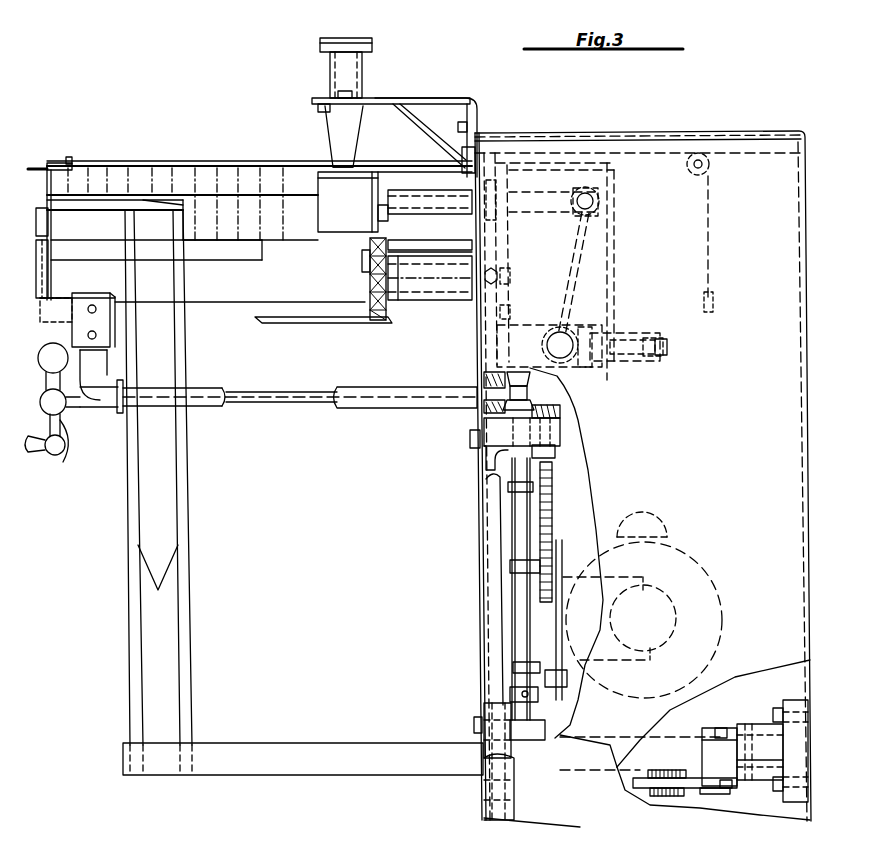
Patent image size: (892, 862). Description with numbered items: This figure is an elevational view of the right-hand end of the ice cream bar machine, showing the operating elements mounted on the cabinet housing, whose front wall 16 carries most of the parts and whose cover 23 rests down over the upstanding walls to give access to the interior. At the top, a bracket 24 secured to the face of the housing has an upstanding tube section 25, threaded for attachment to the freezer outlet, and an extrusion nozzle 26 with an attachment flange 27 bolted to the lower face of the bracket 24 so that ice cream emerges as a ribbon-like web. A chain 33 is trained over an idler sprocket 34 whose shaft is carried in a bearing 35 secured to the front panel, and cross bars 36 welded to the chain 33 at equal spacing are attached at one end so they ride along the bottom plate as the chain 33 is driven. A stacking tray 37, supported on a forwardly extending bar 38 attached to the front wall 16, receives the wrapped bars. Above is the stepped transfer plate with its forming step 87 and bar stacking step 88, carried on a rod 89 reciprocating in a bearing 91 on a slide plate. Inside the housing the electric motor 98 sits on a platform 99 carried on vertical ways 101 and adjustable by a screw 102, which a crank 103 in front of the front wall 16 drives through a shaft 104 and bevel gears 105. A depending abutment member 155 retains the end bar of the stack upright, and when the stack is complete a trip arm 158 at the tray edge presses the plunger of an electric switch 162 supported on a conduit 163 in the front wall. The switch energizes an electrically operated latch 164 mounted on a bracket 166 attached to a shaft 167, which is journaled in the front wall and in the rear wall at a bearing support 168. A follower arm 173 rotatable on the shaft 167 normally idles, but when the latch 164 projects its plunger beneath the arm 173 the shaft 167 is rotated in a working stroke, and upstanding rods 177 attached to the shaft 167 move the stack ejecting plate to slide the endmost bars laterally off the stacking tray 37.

The front wall 16 is at (478, 526).
The cover 23 is at (650, 131).
The bracket 24 is at (413, 98).
The tube section 25 is at (350, 78).
The extrusion nozzle 26 is at (343, 125).
The attachment flange 27 is at (312, 103).
The chain 33 is at (368, 308).
The idler sprocket 34 is at (362, 289).
The bearing 35 is at (436, 288).
The cross bars 36 is at (338, 331).
The stacking tray 37 is at (232, 254).
The forwardly extending bar 38 is at (226, 297).
The forming step 87 is at (374, 194).
The bar stacking step 88 is at (318, 203).
The rod 89 is at (380, 216).
The bearing 91 is at (403, 200).
The electric motor 98 is at (600, 577).
The platform 99 is at (556, 544).
The vertical ways 101 is at (525, 528).
The screw 102 is at (553, 463).
The crank 103 is at (68, 432).
The shaft 104 is at (268, 395).
The bevel gears 105 is at (548, 392).
The abutment member 155 is at (60, 160).
The trip arm 158 is at (36, 222).
The electric switch 162 is at (84, 322).
The conduit 163 is at (110, 410).
The electrically operated latch 164 is at (656, 803).
The bracket 166 is at (716, 770).
The shaft 167 is at (320, 763).
The bearing support 168 is at (797, 797).
The follower arm 173 is at (760, 762).
The upstanding rods 177 is at (158, 477).